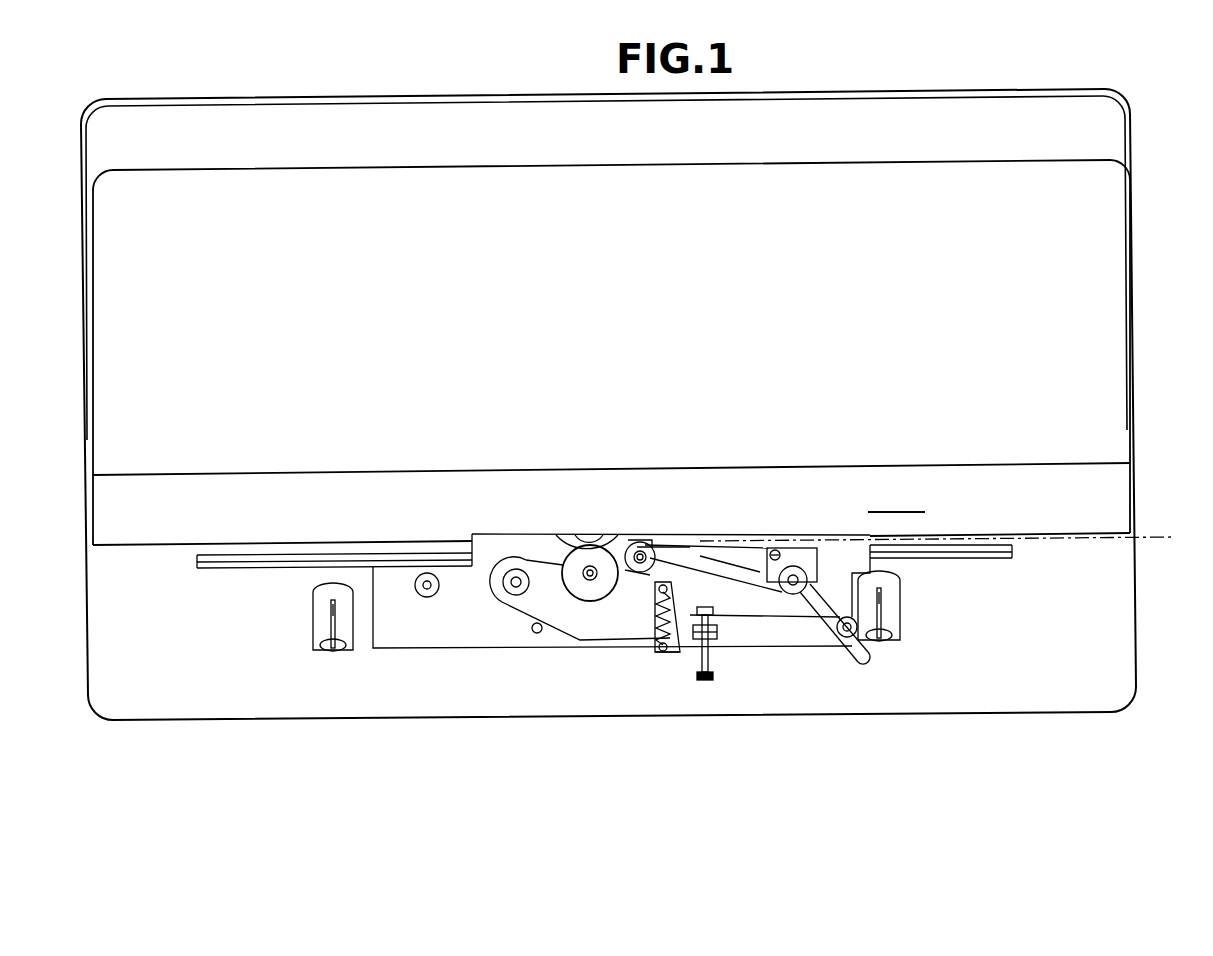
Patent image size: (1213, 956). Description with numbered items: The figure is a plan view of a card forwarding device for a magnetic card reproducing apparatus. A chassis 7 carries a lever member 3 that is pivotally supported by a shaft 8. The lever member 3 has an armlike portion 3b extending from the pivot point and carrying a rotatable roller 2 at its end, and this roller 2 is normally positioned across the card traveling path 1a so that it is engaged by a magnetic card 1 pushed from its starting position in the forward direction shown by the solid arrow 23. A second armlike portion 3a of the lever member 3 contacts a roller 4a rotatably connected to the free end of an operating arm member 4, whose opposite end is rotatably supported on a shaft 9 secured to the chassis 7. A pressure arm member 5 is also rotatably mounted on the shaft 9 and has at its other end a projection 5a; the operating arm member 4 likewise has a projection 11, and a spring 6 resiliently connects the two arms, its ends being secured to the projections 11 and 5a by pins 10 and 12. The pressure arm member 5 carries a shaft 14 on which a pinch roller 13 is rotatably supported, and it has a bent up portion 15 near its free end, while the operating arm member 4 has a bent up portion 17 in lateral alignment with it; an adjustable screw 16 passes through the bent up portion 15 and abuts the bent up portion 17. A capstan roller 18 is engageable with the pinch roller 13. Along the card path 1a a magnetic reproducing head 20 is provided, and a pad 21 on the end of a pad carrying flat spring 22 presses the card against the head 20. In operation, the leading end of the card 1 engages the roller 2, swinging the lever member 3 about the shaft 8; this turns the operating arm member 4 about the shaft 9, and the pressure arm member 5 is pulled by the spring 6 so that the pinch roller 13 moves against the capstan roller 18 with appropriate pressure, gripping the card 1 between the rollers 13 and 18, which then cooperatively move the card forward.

The magnetic card 1 is at (1020, 539).
The card traveling path 1a is at (1012, 548).
The roller 2 is at (630, 545).
The lever member 3 is at (797, 630).
The armlike portion 3a is at (860, 657).
The armlike portion 3b is at (680, 548).
The operating arm member 4 is at (812, 605).
The roller 4a is at (863, 663).
The pressure arm member 5 is at (565, 585).
The projection 5a is at (672, 660).
The spring 6 is at (657, 655).
The chassis 7 is at (318, 707).
The shaft 8 is at (847, 667).
The shaft 9 is at (510, 590).
The pin 10 is at (700, 682).
The projection 11 is at (706, 655).
The pin 12 is at (660, 615).
The pinch roller 13 is at (590, 581).
The shaft 14 is at (582, 600).
The bent up portion 15 is at (712, 612).
The adjustable screw 16 is at (710, 642).
The bent up portion 17 is at (733, 600).
The capstan roller 18 is at (548, 607).
The magnetic reproducing head 20 is at (632, 575).
The pad 21 is at (640, 560).
The pad carrying flat spring 22 is at (757, 585).
The arrow 23 is at (925, 512).